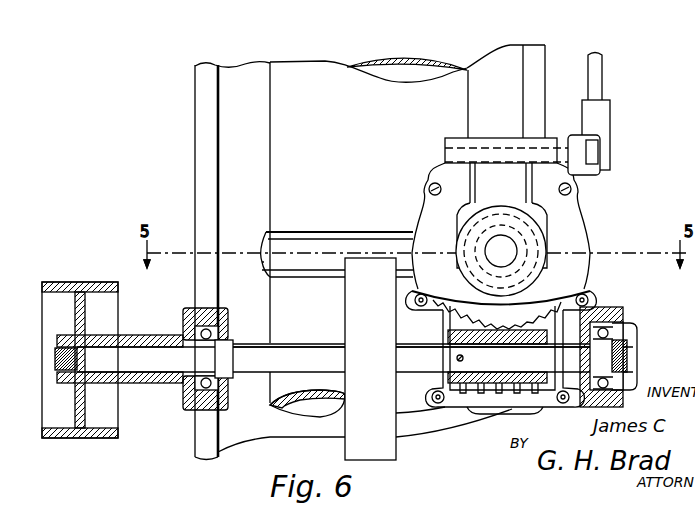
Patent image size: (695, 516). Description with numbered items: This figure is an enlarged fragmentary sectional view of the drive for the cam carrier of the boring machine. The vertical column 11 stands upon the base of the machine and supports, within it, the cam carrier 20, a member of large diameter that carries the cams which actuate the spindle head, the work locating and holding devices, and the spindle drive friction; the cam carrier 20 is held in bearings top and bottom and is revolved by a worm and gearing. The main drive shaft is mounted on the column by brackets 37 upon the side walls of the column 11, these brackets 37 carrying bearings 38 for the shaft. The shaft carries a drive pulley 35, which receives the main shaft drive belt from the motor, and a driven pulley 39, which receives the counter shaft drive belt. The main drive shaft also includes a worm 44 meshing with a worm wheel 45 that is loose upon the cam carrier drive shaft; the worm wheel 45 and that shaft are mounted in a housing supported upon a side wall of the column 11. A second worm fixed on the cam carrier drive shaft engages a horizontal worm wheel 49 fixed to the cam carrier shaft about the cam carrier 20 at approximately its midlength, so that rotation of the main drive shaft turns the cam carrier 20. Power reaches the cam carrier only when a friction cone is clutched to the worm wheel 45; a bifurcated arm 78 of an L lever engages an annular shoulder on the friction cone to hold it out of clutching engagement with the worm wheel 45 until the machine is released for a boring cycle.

The vertical column 11 is at (238, 136).
The cam carrier 20 is at (285, 168).
The drive pulley 35 is at (67, 281).
The brackets 37 is at (624, 312).
The bearings 38 is at (632, 372).
The driven pulley 39 is at (383, 433).
The worm 44 is at (490, 388).
The worm wheel 45 is at (582, 296).
The horizontal worm wheel 49 is at (278, 263).
The bifurcated arm 78 is at (525, 211).